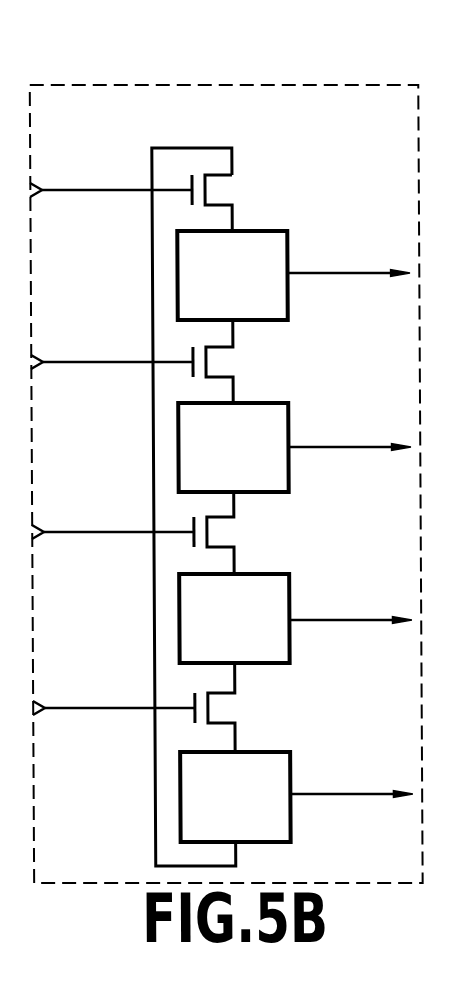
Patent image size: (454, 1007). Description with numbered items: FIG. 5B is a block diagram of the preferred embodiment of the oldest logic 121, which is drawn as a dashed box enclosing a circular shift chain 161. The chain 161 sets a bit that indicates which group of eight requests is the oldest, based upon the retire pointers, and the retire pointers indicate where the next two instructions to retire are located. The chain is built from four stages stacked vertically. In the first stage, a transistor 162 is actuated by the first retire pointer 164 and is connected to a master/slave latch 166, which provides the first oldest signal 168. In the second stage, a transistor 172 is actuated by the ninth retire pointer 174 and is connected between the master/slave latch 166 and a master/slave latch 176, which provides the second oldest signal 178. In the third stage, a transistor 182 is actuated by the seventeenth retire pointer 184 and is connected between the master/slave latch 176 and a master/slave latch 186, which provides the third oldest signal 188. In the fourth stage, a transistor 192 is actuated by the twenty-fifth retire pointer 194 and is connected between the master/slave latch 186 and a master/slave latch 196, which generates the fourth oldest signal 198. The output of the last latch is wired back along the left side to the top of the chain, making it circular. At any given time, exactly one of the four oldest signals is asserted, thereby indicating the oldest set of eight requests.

The oldest logic 121 is at (252, 84).
The circular shift chain 161 is at (216, 148).
The transistor 162 is at (246, 190).
The retire pointer RET[1] 164 is at (56, 191).
The master/slave latch 166 is at (286, 305).
The oldest signal OLD[0] 168 is at (336, 274).
The transistor 172 is at (246, 362).
The retire pointer RET[9] 174 is at (56, 363).
The master/slave latch 176 is at (286, 477).
The oldest signal OLD[1] 178 is at (336, 448).
The transistor 182 is at (246, 532).
The retire pointer RET[17] 184 is at (56, 533).
The master/slave latch 186 is at (286, 648).
The oldest signal OLD[2] 188 is at (336, 621).
The transistor 192 is at (246, 708).
The retire pointer RET[25] 194 is at (56, 709).
The master/slave latch 196 is at (286, 827).
The oldest signal OLD[3] 198 is at (336, 795).